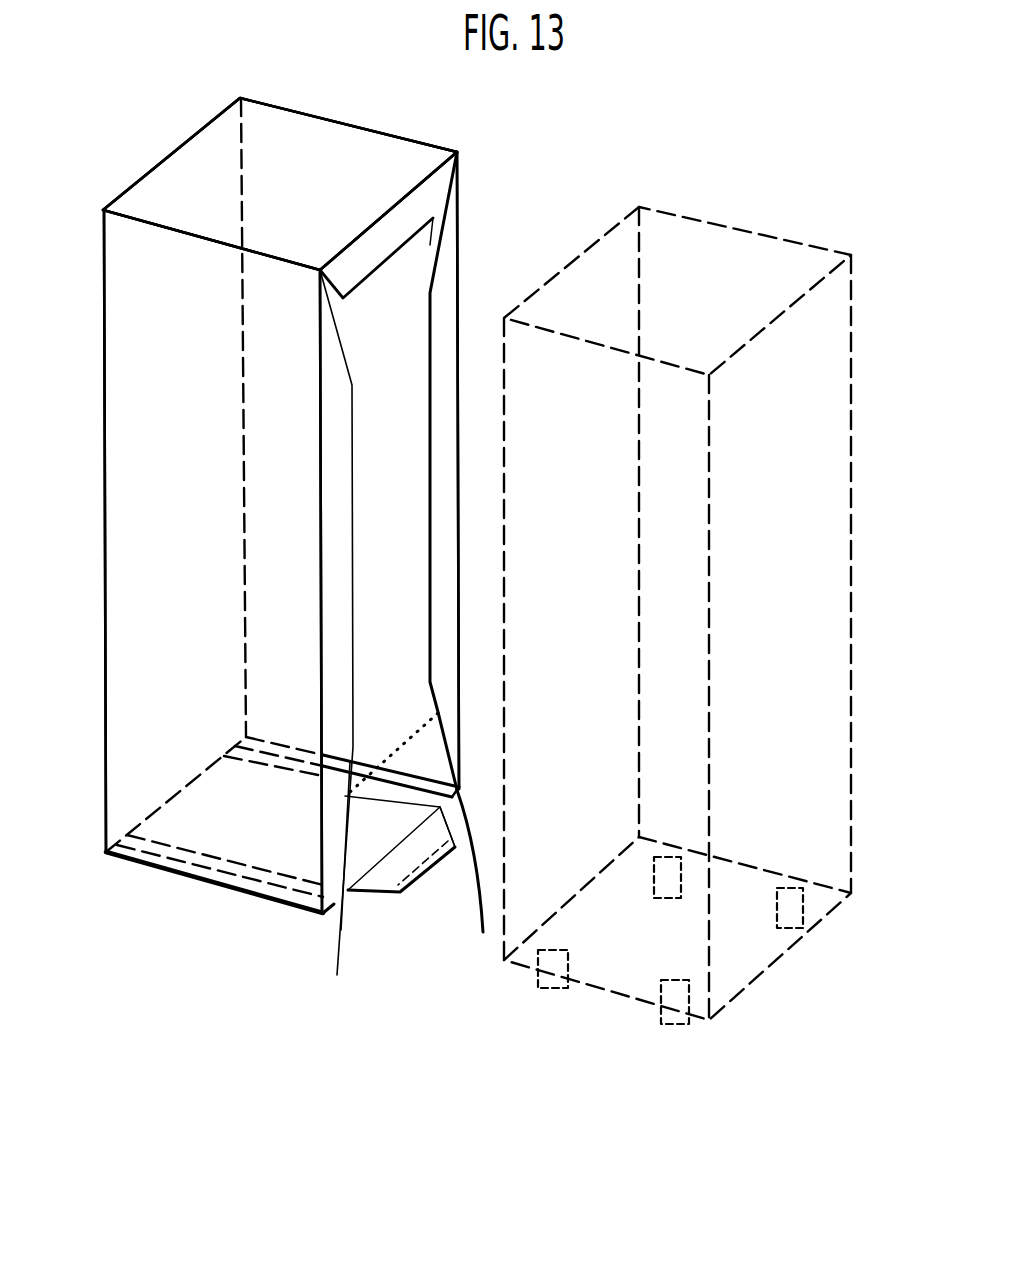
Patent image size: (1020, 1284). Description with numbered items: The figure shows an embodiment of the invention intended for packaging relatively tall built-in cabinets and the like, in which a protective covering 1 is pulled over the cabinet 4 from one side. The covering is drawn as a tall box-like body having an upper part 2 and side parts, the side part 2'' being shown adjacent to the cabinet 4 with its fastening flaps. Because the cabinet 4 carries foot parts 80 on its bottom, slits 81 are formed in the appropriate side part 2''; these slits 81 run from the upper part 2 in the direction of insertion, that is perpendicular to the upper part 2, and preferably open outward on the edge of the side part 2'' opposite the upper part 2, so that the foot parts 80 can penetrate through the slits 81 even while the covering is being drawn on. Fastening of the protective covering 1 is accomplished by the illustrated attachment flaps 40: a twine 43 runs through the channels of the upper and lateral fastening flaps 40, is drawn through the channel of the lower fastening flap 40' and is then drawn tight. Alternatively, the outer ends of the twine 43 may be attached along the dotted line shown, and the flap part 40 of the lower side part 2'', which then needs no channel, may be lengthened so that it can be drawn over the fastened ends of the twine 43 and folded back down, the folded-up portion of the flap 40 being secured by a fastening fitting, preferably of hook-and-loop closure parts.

The protective covering 1 is at (472, 224).
The upper part 2 is at (257, 505).
The side part 2'' is at (280, 507).
The cabinet 4 is at (866, 485).
The attachment flap 40 is at (388, 548).
The lower fastening flap 40' is at (440, 857).
The twine 43 is at (432, 222).
The foot parts 80 is at (553, 990).
The slits 81 is at (290, 756).